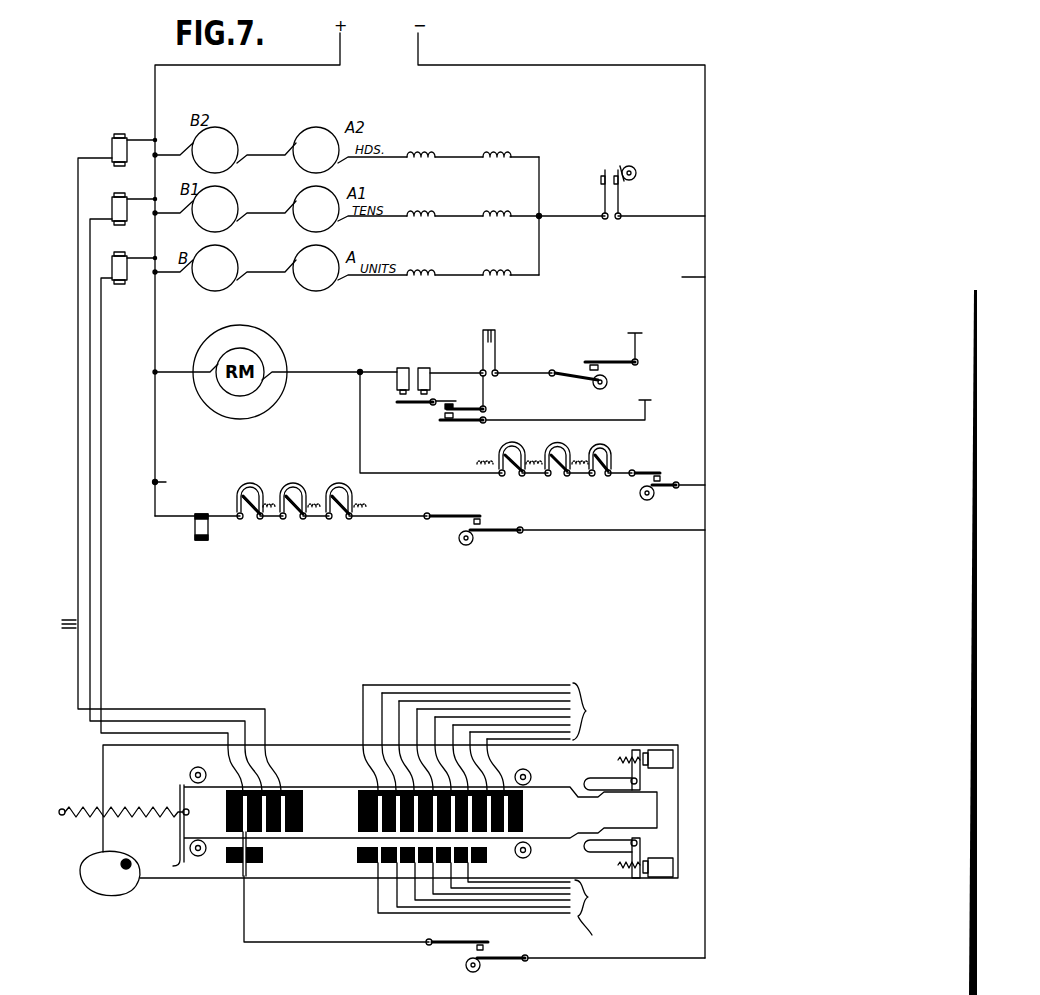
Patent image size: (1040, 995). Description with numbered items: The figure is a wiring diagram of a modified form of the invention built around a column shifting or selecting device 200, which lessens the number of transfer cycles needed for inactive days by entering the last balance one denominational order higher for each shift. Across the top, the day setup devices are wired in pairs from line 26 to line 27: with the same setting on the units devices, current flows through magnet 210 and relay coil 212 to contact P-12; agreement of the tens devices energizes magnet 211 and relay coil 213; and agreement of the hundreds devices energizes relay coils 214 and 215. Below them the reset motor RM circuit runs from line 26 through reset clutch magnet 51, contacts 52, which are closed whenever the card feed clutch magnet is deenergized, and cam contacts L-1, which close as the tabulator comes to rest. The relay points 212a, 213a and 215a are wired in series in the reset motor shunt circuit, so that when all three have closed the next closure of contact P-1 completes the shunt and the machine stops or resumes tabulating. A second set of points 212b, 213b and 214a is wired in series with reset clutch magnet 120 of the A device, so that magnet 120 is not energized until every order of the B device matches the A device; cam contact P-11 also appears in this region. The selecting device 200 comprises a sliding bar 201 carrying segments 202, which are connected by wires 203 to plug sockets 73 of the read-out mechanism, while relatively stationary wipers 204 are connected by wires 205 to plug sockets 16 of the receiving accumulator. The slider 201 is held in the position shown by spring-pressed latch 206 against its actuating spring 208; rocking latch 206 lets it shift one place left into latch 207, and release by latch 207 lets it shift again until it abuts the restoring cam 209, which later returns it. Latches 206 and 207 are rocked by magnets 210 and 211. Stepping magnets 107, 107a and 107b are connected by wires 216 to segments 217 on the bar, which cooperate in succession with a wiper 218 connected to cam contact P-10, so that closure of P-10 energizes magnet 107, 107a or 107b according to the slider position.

The stepping magnet 107b is at (112, 146).
The stepping magnet 107a is at (112, 208).
The stepping magnet 107 is at (112, 270).
The relay coil 214 is at (435, 154).
The relay coil 215 is at (508, 154).
The magnet 211 is at (424, 221).
The relay coil 213 is at (492, 221).
The magnet 210 is at (428, 280).
The relay coil 212 is at (498, 280).
The cam contact P-12 is at (621, 170).
The line 27 is at (680, 278).
The reset clutch magnet 51 is at (424, 382).
The contacts 52 is at (497, 345).
The cam contacts L-1 is at (578, 368).
The relay points 215a is at (505, 450).
The relay points 213a is at (560, 448).
The relay points 212a is at (612, 455).
The cam contact P-1 is at (662, 481).
The line 26 is at (173, 486).
The reset clutch magnet 120 is at (208, 530).
The relay points 212b is at (257, 519).
The relay points 213b is at (293, 522).
The relay points 214a is at (346, 521).
The cam contact P-11 is at (493, 527).
The wires 216 is at (52, 626).
The column shifting or selecting device 200 is at (320, 741).
The restoring cam 209 is at (112, 888).
The actuating spring 208 is at (138, 803).
The segments 217 is at (264, 832).
The segments 202 is at (493, 842).
The wiper 218 is at (241, 868).
The wipers 204 is at (413, 866).
The sliding bar 201 is at (334, 830).
The wires 205 is at (546, 898).
The plug sockets 16 is at (750, 952).
The wires 203 is at (514, 715).
The plug sockets 73 is at (705, 682).
The spring-pressed latch 206 is at (604, 782).
The latch 207 is at (604, 850).
The cam contact P-10 is at (470, 951).